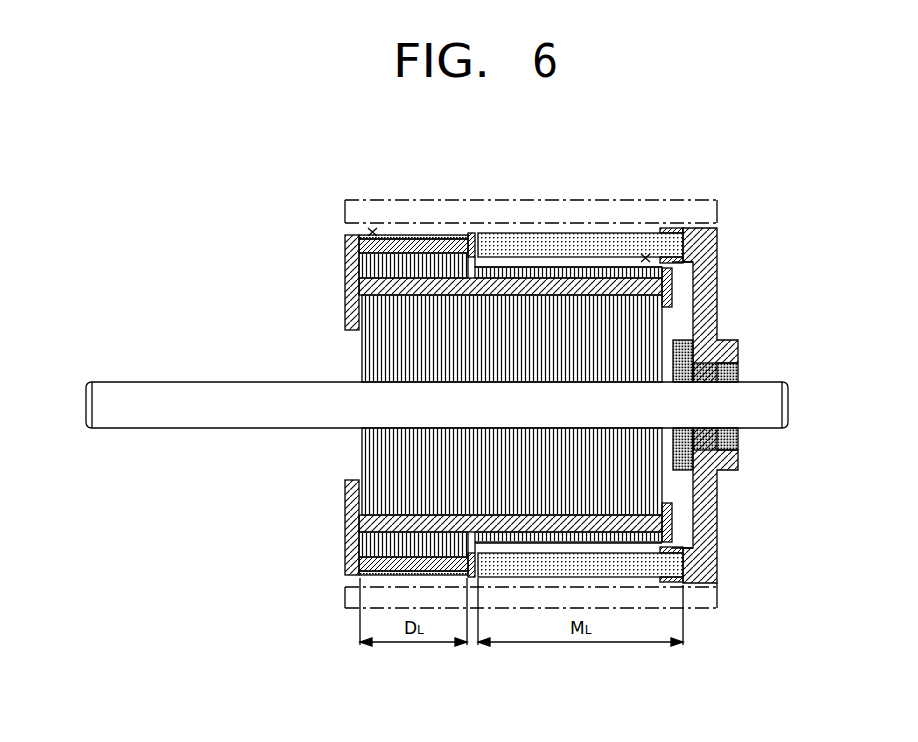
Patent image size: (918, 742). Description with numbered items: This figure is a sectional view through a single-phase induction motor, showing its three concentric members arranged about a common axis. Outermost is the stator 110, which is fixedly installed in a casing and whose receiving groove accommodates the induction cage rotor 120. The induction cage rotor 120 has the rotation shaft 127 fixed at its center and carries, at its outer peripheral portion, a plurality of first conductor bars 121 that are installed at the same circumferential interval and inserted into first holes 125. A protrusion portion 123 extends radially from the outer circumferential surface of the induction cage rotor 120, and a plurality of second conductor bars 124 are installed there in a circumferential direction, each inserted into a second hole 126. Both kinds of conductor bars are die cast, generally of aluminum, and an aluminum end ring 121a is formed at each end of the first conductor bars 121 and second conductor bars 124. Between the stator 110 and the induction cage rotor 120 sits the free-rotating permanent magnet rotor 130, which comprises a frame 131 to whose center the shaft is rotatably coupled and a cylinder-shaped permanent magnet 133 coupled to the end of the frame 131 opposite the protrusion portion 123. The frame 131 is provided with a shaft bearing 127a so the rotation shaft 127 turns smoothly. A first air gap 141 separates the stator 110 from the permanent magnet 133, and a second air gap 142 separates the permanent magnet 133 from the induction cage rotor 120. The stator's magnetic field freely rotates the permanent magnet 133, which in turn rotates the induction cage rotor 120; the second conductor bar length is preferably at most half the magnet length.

The stator 110 is at (355, 208).
The induction cage rotor 120 is at (368, 351).
The first conductor bar 121 is at (557, 288).
The end ring 121a is at (350, 271).
The protrusion portion 123 is at (446, 260).
The second conductor bar 124 is at (384, 243).
The first hole 125 is at (603, 280).
The second hole 126 is at (422, 251).
The rotation shaft 127 is at (143, 383).
The shaft bearing 127a is at (727, 369).
The permanent magnet rotor 130 is at (738, 221).
The frame 131 is at (712, 301).
The permanent magnet 133 is at (649, 246).
The first air gap 141 is at (368, 232).
The second air gap 142 is at (686, 259).